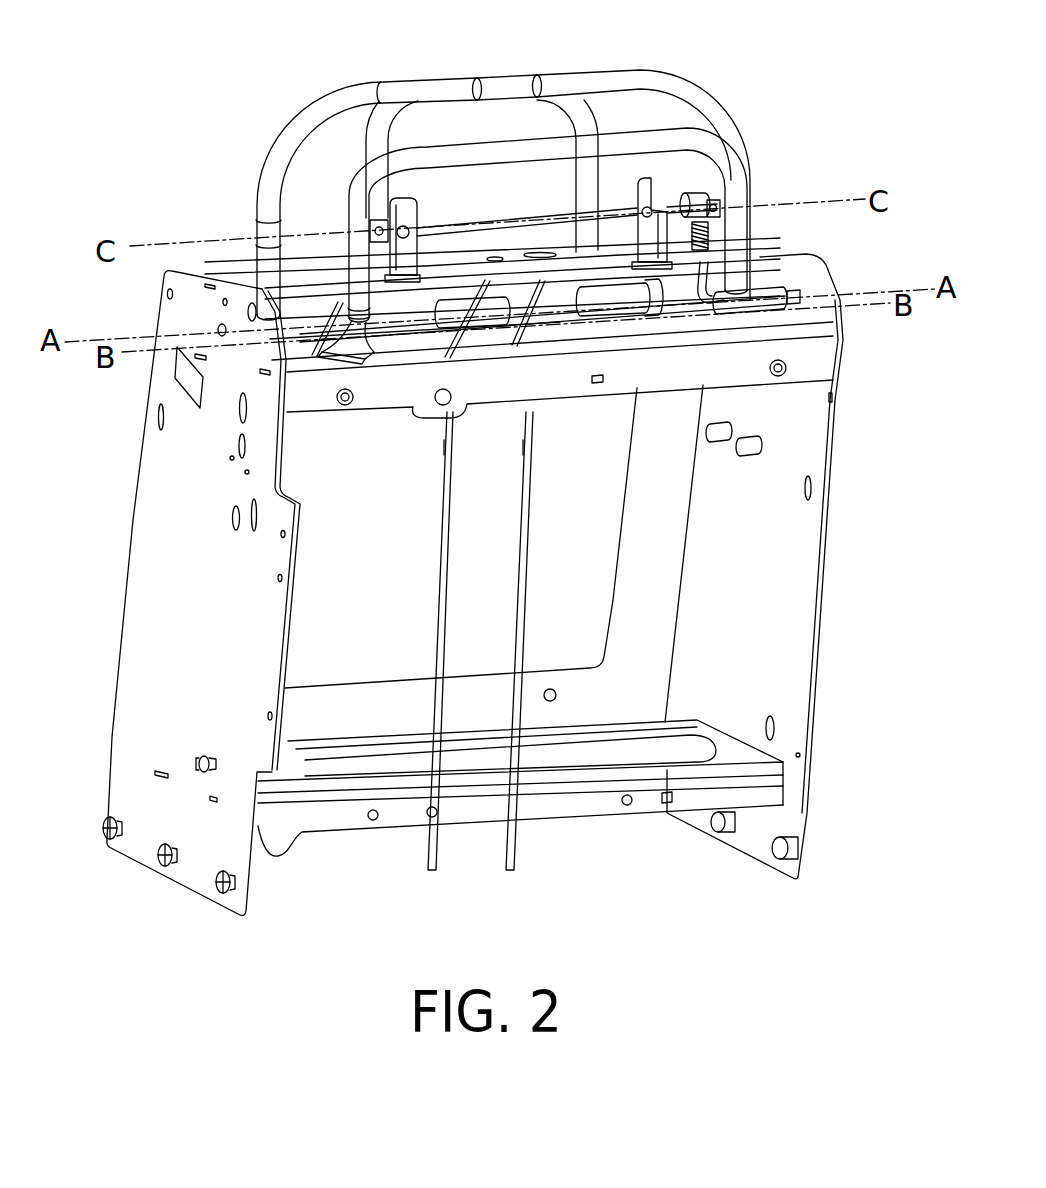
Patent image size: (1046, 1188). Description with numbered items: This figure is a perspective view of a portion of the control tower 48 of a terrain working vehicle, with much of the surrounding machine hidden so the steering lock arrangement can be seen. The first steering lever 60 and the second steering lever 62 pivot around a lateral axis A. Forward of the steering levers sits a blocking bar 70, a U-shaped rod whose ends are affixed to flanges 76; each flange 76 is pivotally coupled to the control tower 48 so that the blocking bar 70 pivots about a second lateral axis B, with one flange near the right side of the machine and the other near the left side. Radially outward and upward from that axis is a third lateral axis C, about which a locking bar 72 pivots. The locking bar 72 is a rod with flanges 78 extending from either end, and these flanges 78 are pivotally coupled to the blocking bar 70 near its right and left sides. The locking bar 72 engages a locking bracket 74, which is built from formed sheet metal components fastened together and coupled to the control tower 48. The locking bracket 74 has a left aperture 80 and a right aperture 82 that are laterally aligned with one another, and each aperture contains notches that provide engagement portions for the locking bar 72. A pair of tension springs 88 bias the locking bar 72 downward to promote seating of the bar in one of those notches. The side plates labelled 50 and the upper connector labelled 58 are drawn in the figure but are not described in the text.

The control tower 48 is at (886, 264).
The frame member 50 is at (147, 601).
The handle connector 58 is at (504, 90).
The first steering lever 60 is at (322, 112).
The second steering lever 62 is at (672, 82).
The blocking bar 70 is at (716, 140).
The locking bar 72 is at (487, 220).
The locking bracket 74 is at (680, 208).
The flanges 76 is at (387, 337).
The flanges 78 is at (377, 229).
The left aperture 80 is at (643, 178).
The right aperture 82 is at (410, 213).
The tension springs 88 is at (712, 242).